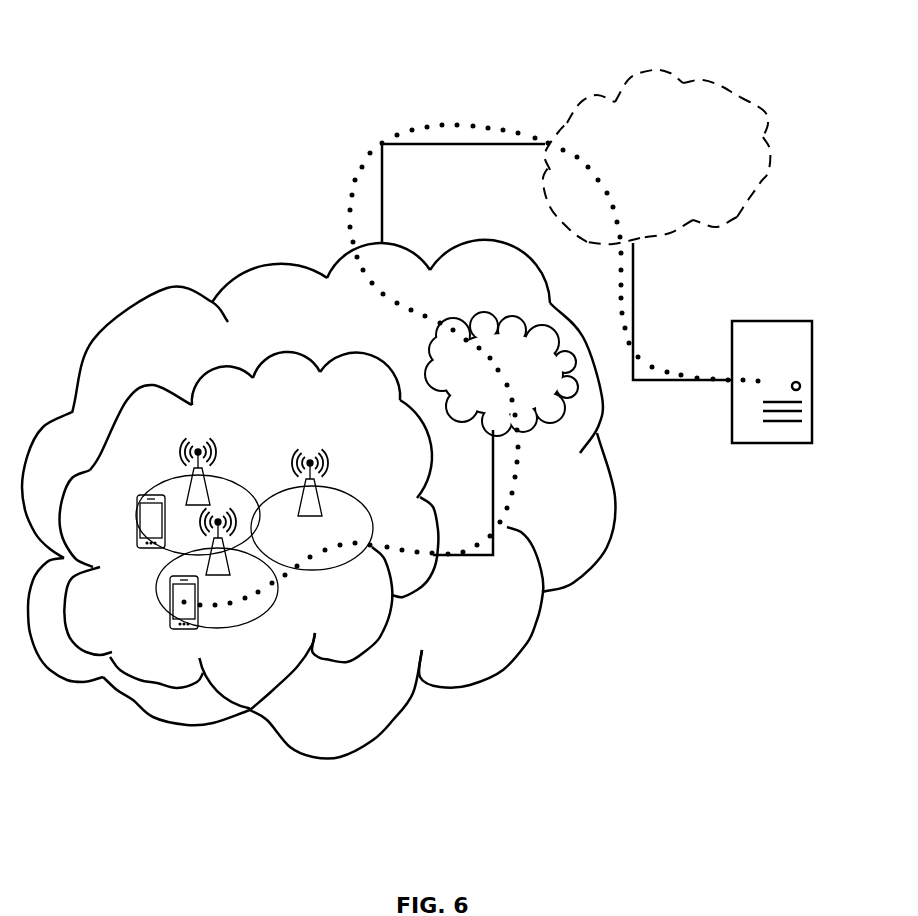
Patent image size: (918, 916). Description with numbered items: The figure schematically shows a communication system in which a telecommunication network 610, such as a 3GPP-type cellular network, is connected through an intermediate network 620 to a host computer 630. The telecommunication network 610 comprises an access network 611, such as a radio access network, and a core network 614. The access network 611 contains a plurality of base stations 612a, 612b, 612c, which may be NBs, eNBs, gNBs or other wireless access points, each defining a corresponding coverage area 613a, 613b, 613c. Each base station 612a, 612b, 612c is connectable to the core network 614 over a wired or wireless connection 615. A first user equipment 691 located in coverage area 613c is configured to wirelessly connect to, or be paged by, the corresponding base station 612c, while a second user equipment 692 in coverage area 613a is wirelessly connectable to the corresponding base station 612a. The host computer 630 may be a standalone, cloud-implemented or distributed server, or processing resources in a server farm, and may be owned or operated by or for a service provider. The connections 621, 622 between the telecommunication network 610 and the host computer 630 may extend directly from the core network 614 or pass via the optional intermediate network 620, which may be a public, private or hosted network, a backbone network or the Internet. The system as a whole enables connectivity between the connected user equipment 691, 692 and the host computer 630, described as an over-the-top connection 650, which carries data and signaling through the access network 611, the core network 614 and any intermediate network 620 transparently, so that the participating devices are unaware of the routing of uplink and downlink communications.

The telecommunication network 610 is at (335, 307).
The access network 611 is at (292, 413).
The base station 612a is at (230, 576).
The base station 612b is at (335, 463).
The base station 612c is at (182, 451).
The coverage area 613a is at (200, 604).
The coverage area 613b is at (330, 488).
The coverage area 613c is at (150, 496).
The core network 614 is at (571, 387).
The connection 615 is at (495, 472).
The intermediate network 620 is at (678, 167).
The connection 621 is at (458, 145).
The connection 622 is at (690, 381).
The host computer 630 is at (772, 397).
The OTT connection 650 is at (360, 167).
The first user equipment 691 is at (152, 548).
The second user equipment 692 is at (178, 615).